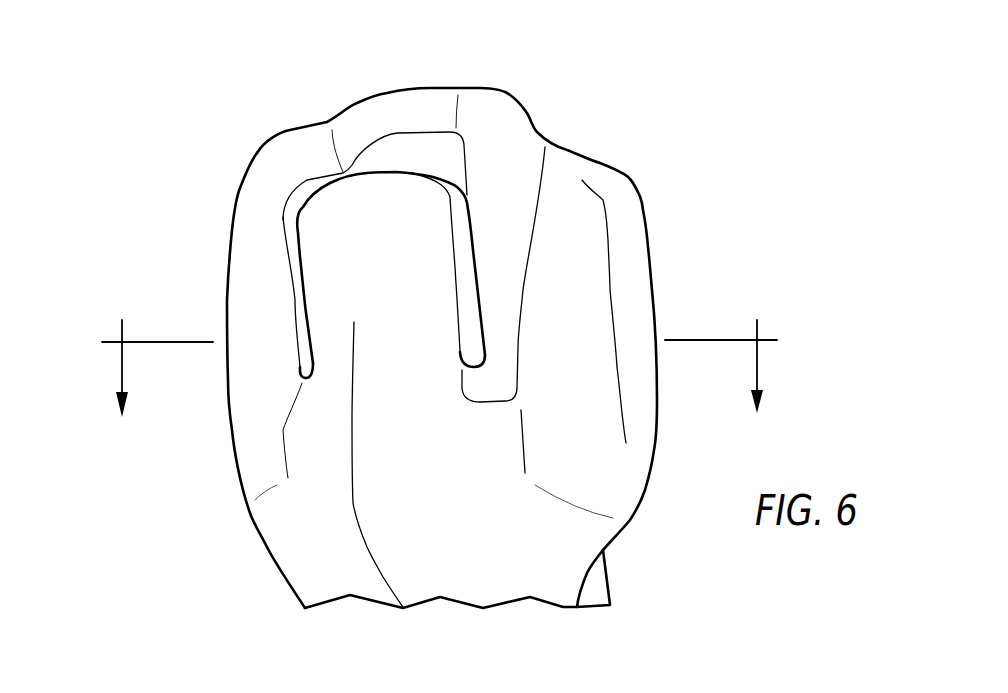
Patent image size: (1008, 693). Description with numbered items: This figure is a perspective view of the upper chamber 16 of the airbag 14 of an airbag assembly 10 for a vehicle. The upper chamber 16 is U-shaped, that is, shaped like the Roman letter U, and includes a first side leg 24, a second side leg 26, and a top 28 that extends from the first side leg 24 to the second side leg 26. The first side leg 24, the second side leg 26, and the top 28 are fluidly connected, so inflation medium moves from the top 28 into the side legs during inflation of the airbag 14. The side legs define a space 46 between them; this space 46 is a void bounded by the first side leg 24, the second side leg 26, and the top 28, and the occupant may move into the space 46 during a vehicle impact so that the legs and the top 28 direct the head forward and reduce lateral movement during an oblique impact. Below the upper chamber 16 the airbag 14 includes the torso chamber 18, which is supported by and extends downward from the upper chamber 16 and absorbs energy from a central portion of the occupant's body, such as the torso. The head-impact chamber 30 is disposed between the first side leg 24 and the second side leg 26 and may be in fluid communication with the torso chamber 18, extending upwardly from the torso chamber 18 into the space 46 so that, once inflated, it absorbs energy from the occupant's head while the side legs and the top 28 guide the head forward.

The airbag assembly 10 is at (438, 367).
The airbag 14 is at (284, 87).
The upper chamber 16 is at (647, 227).
The torso chamber 18 is at (293, 542).
The first side leg 24 is at (252, 270).
The second side leg 26 is at (587, 315).
The top 28 is at (437, 110).
The head-impact chamber 30 is at (428, 217).
The space 46 is at (440, 157).